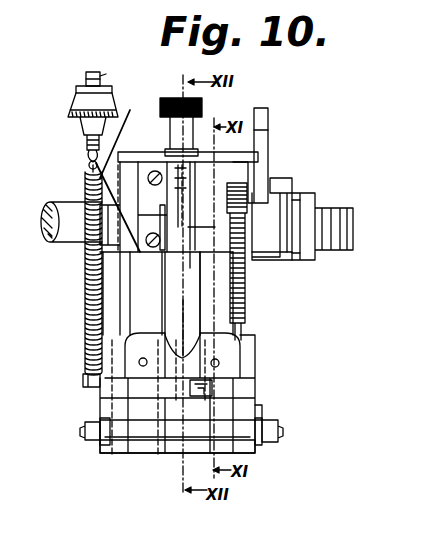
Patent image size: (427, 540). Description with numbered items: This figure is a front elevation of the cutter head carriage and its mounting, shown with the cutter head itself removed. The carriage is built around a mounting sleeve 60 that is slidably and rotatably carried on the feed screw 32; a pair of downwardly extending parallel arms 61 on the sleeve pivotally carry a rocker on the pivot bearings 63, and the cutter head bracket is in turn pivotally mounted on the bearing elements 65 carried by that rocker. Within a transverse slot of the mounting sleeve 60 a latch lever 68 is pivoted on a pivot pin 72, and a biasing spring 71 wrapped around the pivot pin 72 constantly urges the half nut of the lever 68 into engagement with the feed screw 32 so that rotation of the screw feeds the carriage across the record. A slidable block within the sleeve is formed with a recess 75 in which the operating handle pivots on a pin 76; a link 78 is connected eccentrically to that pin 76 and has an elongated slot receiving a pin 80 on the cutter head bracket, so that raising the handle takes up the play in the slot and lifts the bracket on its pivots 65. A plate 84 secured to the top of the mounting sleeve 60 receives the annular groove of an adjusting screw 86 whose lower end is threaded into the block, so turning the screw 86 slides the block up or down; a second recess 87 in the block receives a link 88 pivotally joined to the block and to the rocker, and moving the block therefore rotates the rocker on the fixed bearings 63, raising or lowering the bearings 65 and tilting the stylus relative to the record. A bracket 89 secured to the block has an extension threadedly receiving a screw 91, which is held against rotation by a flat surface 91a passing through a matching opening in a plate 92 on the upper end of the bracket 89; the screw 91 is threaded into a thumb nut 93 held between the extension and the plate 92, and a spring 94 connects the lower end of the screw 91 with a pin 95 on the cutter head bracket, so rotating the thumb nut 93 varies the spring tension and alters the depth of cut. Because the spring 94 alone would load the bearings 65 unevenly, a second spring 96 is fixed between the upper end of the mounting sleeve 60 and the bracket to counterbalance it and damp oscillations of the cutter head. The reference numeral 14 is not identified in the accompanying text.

The vertical bar 14 is at (200, 166).
The feed screw 32 is at (333, 208).
The mounting sleeve 60 is at (280, 195).
The arms 61 is at (118, 446).
The pivot bearings 63 is at (103, 446).
The bearing elements 65 is at (84, 428).
The latch lever 68 is at (268, 134).
The biasing spring 71 is at (285, 254).
The pivot pin 72 is at (289, 195).
The recess 75 is at (165, 282).
The pin 76 is at (190, 255).
The link 78 is at (201, 304).
The pin 80 is at (212, 392).
The plate 84 is at (124, 156).
The adjusting screw 86 is at (169, 99).
The second recess 87 is at (155, 256).
The link 88 is at (181, 327).
The bracket 89 is at (122, 170).
The screw 91 is at (92, 73).
The flat surface 91a is at (101, 80).
The plate 92 is at (78, 85).
The thumb nut 93 is at (74, 101).
The spring 94 is at (85, 262).
The pin 95 is at (83, 381).
The second spring 96 is at (246, 308).